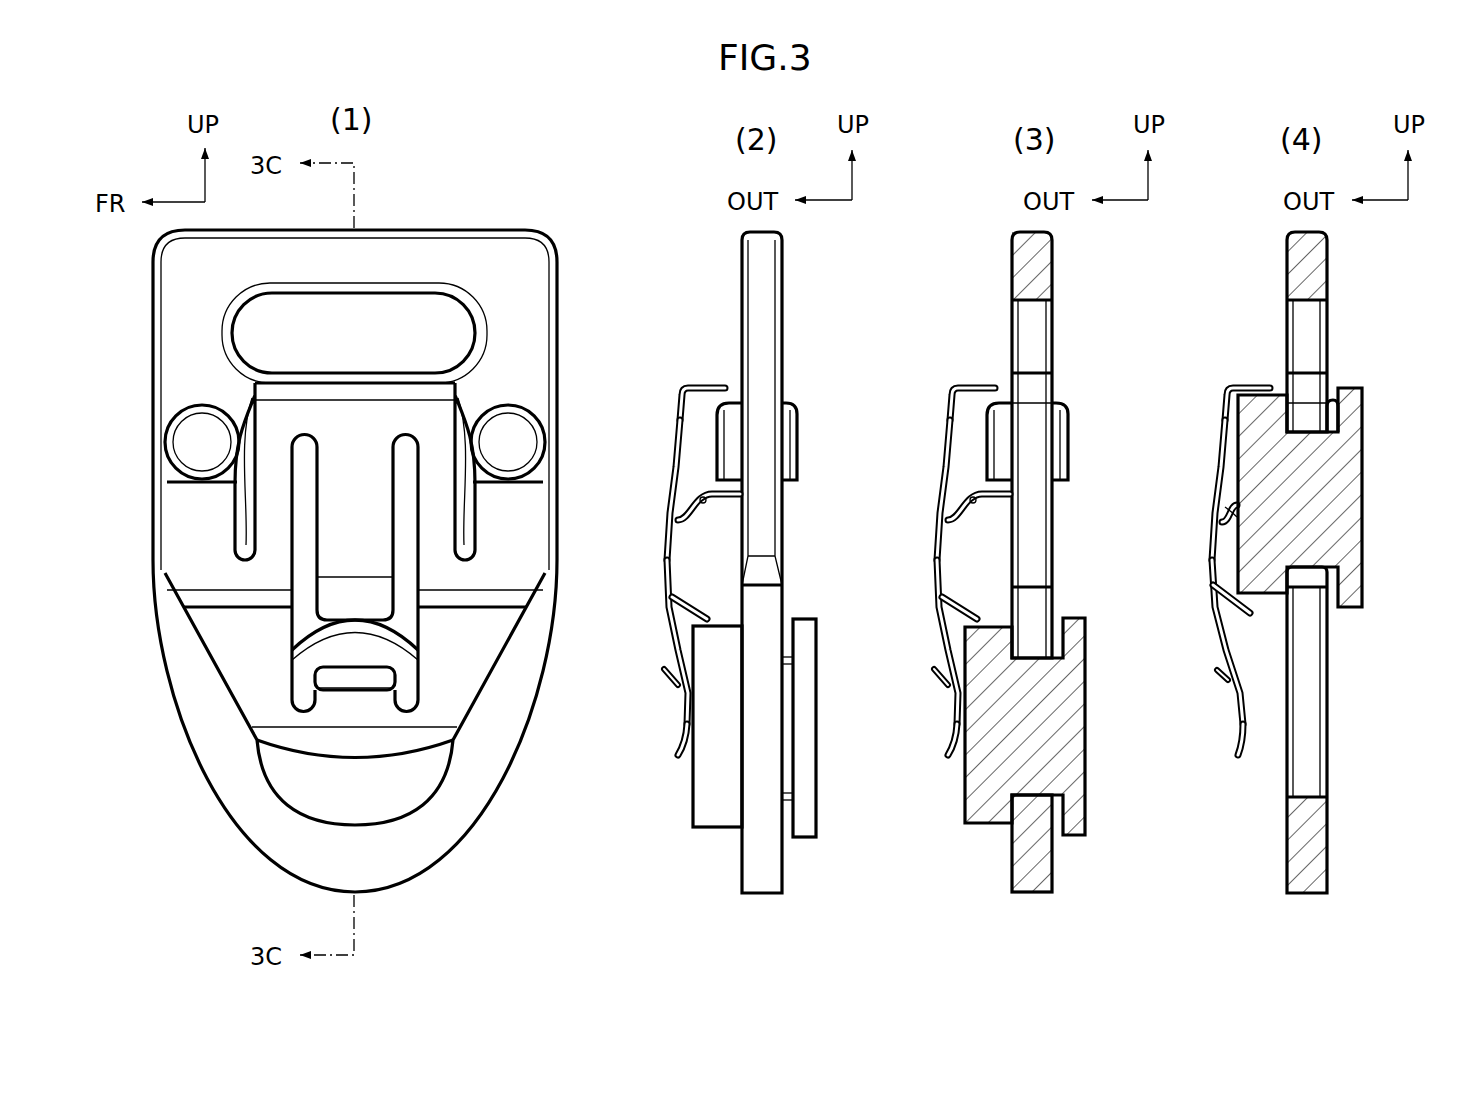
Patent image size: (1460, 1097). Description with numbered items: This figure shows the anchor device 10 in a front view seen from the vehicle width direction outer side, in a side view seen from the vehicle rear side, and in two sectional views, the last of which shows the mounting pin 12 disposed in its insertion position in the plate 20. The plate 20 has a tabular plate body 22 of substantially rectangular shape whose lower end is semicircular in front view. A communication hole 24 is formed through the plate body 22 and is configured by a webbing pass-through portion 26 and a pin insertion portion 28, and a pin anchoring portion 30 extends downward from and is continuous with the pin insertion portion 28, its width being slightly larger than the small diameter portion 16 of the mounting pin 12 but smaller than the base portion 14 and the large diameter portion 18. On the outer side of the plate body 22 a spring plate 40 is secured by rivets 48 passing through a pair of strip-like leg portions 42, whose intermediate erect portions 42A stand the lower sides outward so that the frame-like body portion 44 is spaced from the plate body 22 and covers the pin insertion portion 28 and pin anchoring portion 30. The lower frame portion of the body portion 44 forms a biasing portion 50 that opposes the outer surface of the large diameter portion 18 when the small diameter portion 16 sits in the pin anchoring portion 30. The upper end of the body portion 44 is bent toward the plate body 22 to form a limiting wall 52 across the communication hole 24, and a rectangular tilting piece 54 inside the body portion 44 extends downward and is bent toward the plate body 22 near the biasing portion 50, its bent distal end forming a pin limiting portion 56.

The anchor device 10 is at (537, 212).
The mounting pin 12 is at (450, 777).
The base portion 14 is at (305, 622).
The small diameter portion 16 is at (787, 776).
The large diameter portion 18 is at (412, 808).
The plate 20 is at (452, 218).
The plate body 22 is at (537, 298).
The communication hole 24 is at (460, 342).
The webbing pass-through portion 26 is at (356, 300).
The pin insertion portion 28 is at (1033, 492).
The pin anchoring portion 30 is at (1032, 630).
The spring plate 40 is at (513, 667).
The leg portions 42 is at (172, 478).
The erect portions 42A is at (183, 485).
The body portion 44 is at (437, 533).
The rivets 48 is at (180, 442).
The biasing portion 50 is at (349, 712).
The limiting wall 52 is at (332, 381).
The tilting piece 54 is at (378, 558).
The pin limiting portion 56 is at (350, 610).